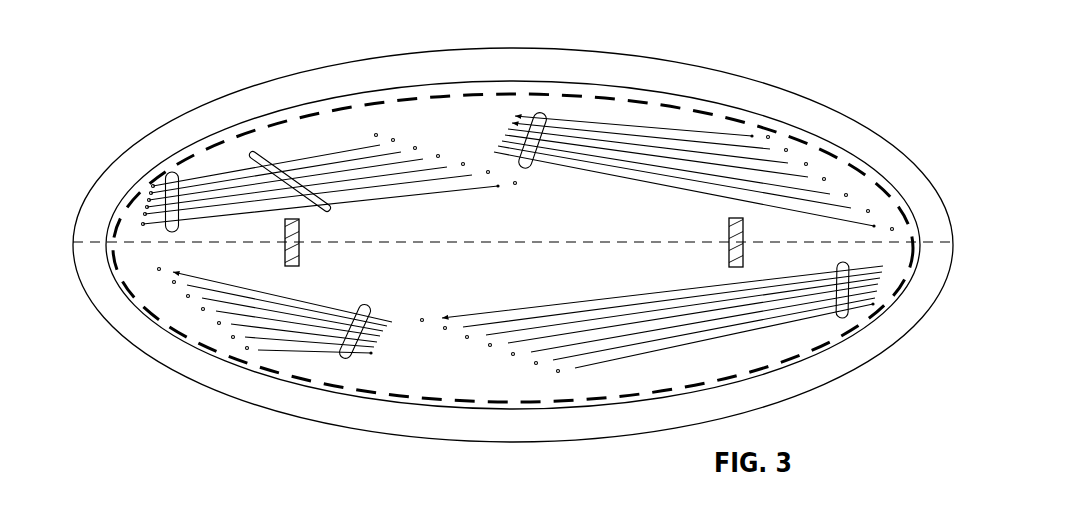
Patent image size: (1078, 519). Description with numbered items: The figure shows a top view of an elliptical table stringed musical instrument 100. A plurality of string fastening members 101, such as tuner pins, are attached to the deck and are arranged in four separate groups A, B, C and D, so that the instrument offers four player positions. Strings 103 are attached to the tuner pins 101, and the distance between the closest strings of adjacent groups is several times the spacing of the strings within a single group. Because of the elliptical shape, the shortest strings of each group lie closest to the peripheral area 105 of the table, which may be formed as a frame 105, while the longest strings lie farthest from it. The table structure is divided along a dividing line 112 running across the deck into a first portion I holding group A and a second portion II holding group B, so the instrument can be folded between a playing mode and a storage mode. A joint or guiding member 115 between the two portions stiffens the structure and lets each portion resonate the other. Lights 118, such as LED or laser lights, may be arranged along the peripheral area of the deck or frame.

The table stringed musical instrument 100 is at (273, 49).
The string fastening members 101 is at (402, 143).
The strings 103 is at (690, 138).
The peripheral area / frame 105 is at (200, 373).
The dividing line 112 is at (122, 241).
The joint or guiding member 115 is at (298, 257).
The lights 118 is at (188, 158).